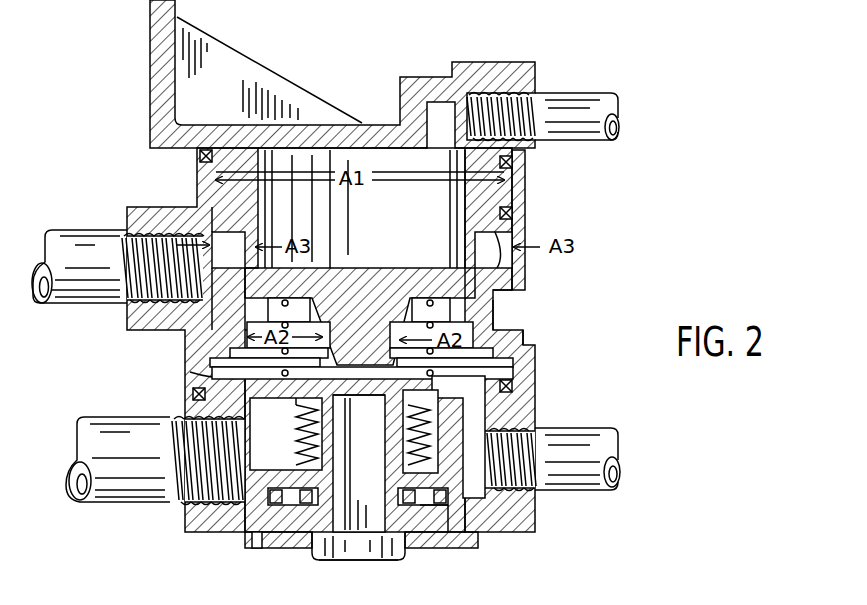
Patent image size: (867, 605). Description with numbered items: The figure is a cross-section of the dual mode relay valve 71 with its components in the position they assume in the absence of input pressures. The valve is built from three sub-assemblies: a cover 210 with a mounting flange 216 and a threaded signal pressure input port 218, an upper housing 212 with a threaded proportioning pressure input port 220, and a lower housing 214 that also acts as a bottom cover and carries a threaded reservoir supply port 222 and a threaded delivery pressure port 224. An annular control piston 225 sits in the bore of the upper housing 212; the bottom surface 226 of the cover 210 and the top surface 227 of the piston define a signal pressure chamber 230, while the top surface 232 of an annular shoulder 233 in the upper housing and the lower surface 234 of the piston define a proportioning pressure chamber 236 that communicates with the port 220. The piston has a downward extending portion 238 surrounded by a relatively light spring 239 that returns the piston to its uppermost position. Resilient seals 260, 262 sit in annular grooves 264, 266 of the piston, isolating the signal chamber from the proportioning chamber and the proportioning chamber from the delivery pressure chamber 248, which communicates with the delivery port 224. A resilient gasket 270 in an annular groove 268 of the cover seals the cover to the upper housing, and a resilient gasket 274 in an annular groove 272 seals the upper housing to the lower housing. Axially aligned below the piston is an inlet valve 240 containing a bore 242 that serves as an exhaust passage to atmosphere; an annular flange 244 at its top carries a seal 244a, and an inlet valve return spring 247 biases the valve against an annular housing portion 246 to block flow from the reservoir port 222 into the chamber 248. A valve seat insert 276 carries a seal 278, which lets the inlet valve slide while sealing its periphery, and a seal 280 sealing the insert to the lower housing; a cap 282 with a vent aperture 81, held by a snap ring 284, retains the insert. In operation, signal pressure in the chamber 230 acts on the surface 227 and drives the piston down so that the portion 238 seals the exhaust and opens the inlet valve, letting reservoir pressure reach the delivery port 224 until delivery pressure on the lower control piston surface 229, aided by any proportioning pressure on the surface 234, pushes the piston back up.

The dual mode relay valve 71 is at (636, 198).
The vent port 81 is at (372, 562).
The cover 210 is at (372, 64).
The upper housing 212 is at (190, 194).
The lower housing 214 is at (208, 540).
The mounting flange 216 is at (150, 52).
The signal pressure input port 218 is at (537, 96).
The proportioning pressure input port 220 is at (127, 235).
The reservoir supply port 222 is at (178, 506).
The delivery pressure port 224 is at (538, 490).
The control piston 225 is at (360, 316).
The bottom surface of the cover 226 is at (370, 149).
The top surface of the control piston 227 is at (388, 262).
The lower control piston surface 229 is at (228, 326).
The signal pressure chamber 230 is at (361, 209).
The top surface of the annular shoulder 232 is at (500, 300).
The annular shoulder 233 is at (222, 268).
The lower surface of the control piston 234 is at (514, 280).
The proportioning pressure chamber 236 is at (210, 250).
The downward extending portion 238 is at (372, 358).
The light spring 239 is at (285, 374).
The inlet valve 240 is at (359, 463).
The bore 242 is at (366, 500).
The annular flange 244 is at (344, 431).
The seal 244a is at (292, 415).
The annular housing portion 246 is at (363, 464).
The inlet valve return spring 247 is at (470, 414).
The delivery pressure chamber 248 is at (500, 372).
The resilient seal 260 is at (514, 214).
The resilient seal 262 is at (497, 326).
The annular groove 264 is at (520, 194).
The annular groove 266 is at (535, 344).
The annular groove 268 is at (514, 162).
The resilient gasket 270 is at (200, 154).
The annular groove 272 is at (514, 386).
The resilient gasket 274 is at (192, 394).
The valve seat insert 276 is at (452, 512).
The resilient seal 278 is at (430, 520).
The resilient seal 280 is at (480, 520).
The cap 282 is at (316, 562).
The snap ring 284 is at (276, 548).